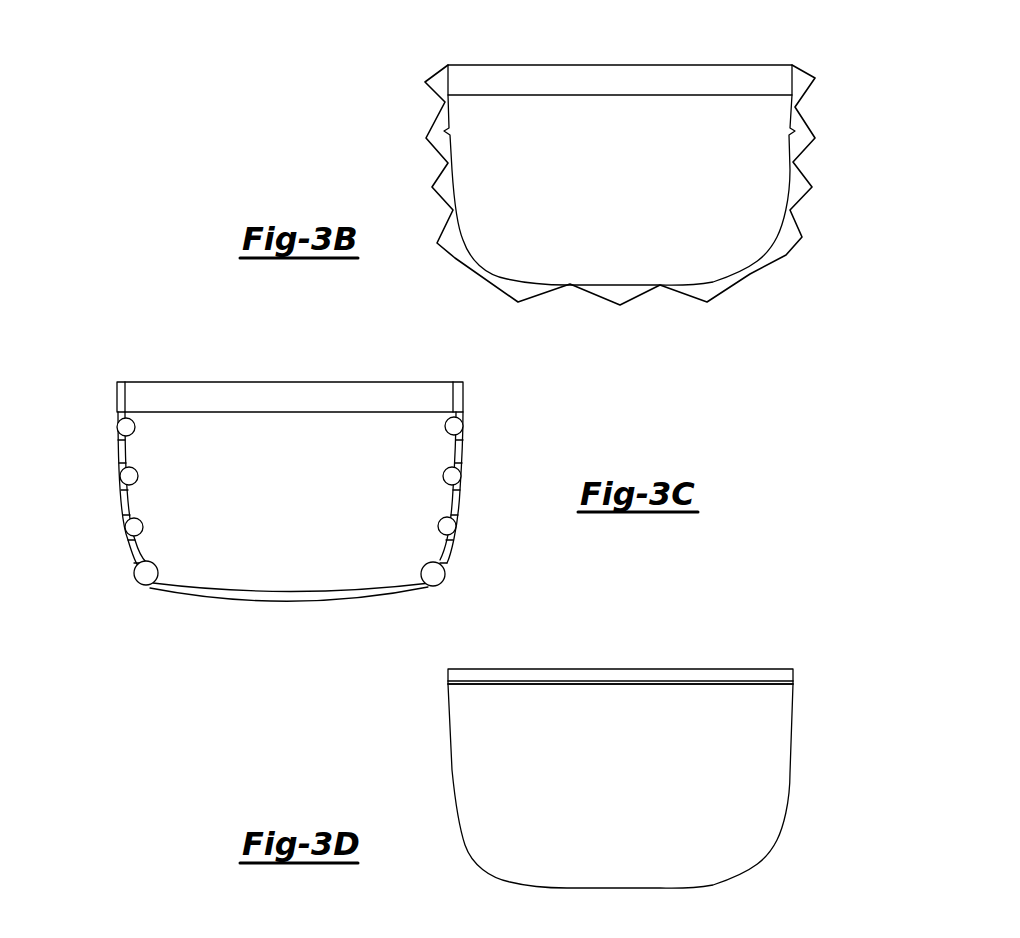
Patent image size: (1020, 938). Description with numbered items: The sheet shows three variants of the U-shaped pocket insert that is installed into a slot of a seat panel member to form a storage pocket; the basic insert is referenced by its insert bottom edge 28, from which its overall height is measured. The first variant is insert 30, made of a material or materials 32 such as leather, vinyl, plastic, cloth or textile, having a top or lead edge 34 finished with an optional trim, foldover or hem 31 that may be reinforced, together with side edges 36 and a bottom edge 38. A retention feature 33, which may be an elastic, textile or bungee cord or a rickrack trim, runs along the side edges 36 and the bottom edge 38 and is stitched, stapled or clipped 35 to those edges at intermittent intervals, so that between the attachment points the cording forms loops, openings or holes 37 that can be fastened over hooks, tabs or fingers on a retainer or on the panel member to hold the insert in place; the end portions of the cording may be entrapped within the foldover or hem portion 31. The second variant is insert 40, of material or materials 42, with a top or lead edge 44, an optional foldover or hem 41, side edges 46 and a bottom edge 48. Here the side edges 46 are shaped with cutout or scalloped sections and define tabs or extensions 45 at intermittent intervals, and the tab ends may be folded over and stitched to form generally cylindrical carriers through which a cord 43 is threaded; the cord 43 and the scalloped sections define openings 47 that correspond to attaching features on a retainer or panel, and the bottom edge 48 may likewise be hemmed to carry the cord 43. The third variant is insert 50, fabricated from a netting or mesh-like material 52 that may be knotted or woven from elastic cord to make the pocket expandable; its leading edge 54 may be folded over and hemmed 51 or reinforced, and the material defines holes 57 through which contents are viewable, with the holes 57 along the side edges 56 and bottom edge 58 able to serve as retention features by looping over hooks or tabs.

In FIG. 3B, the insert bottom edge 28 is at (290, 0).
In FIG. 3B, the insert 30 is at (607, 176).
In FIG. 3B, the foldover or hem 31 is at (580, 85).
In FIG. 3B, the material 32 is at (631, 195).
In FIG. 3B, the retention feature 33 is at (800, 70).
In FIG. 3B, the top or lead edge 34 is at (513, 65).
In FIG. 3B, the stitching, staple or clip 35 is at (795, 160).
In FIG. 3B, the side edges 36 is at (790, 130).
In FIG. 3B, the loops, openings or holes 37 is at (798, 185).
In FIG. 3B, the bottom edge 38 is at (712, 282).
In FIG. 3C, the insert 40 is at (297, 481).
In FIG. 3C, the foldover or hem 41 is at (248, 405).
In FIG. 3C, the material 42 is at (301, 510).
In FIG. 3C, the cord 43 is at (125, 478).
In FIG. 3C, the top or lead edge 44 is at (183, 382).
In FIG. 3C, the tabs or extensions 45 is at (122, 505).
In FIG. 3C, the side edges 46 is at (120, 427).
In FIG. 3C, the openings 47 is at (128, 528).
In FIG. 3C, the bottom edge 48 is at (230, 600).
In FIG. 3D, the insert 50 is at (623, 762).
In FIG. 3D, the hem 51 is at (572, 680).
In FIG. 3D, the netting or mesh-like material 52 is at (650, 720).
In FIG. 3D, the leading edge 54 is at (513, 669).
In FIG. 3D, the side edges 56 is at (450, 800).
In FIG. 3D, the holes 57 is at (470, 713).
In FIG. 3D, the bottom edge 58 is at (540, 888).